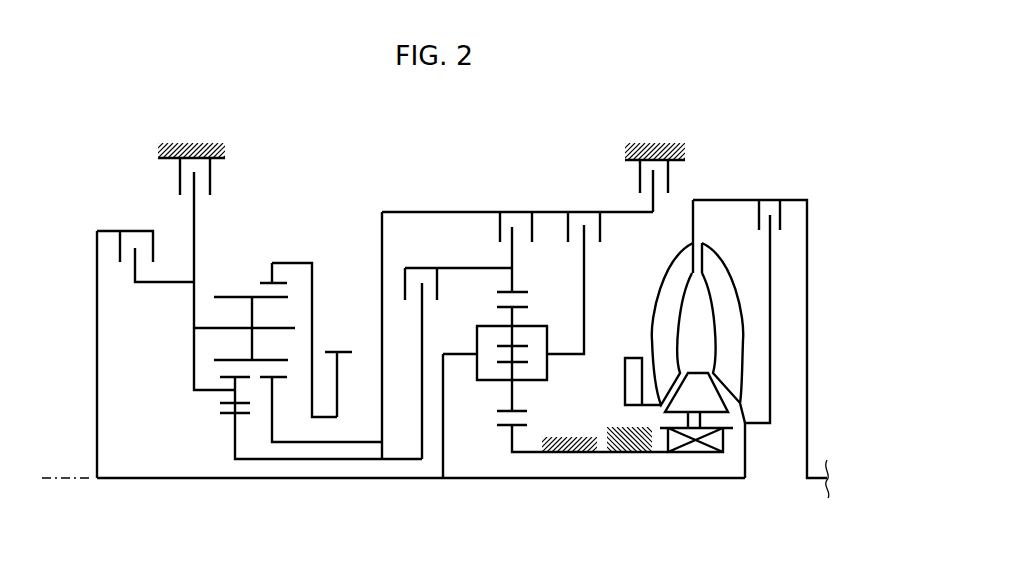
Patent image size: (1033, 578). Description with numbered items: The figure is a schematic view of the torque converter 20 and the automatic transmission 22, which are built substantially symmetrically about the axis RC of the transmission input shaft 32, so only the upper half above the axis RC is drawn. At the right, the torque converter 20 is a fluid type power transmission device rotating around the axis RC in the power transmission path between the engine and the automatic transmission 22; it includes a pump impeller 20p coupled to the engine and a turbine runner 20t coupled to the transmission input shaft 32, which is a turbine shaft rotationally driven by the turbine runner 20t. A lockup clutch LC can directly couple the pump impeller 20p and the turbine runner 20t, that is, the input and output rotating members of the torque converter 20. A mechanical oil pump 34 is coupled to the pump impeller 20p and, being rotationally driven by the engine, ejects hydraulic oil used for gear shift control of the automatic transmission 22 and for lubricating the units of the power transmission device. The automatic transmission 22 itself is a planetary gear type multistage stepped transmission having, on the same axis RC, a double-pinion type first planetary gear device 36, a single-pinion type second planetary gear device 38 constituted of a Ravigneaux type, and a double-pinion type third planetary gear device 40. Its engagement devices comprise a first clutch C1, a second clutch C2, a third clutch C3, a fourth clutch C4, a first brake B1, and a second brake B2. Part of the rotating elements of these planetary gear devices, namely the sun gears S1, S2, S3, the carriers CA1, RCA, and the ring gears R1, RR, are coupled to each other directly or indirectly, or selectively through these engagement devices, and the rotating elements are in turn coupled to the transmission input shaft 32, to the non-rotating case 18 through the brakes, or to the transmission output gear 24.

The automatic transmission 22 is at (173, 125).
The case 18 is at (199, 152).
The second brake B2 is at (210, 274).
The second clutch C2 is at (145, 242).
The ring gear RR is at (262, 282).
The carrier RCA is at (193, 345).
The transmission output gear 24 is at (343, 350).
The sun gear S3 is at (228, 408).
The sun gear S2 is at (284, 378).
The third planetary gear device 40 is at (230, 488).
The second planetary gear device 38 is at (273, 488).
The axis RC is at (55, 481).
The first clutch C1 is at (458, 348).
The carrier CA1 is at (465, 353).
The third clutch C3 is at (516, 237).
The ring gear R1 is at (518, 292).
The fourth clutch C4 is at (573, 268).
The sun gear S1 is at (505, 425).
The first planetary gear device 36 is at (515, 490).
The transmission input shaft 32 is at (590, 482).
The first brake B1 is at (669, 186).
The lockup clutch LC is at (751, 215).
The torque converter 20 is at (662, 262).
The pump impeller 20p is at (668, 340).
The turbine runner 20t is at (728, 318).
The oil pump 34 is at (632, 383).